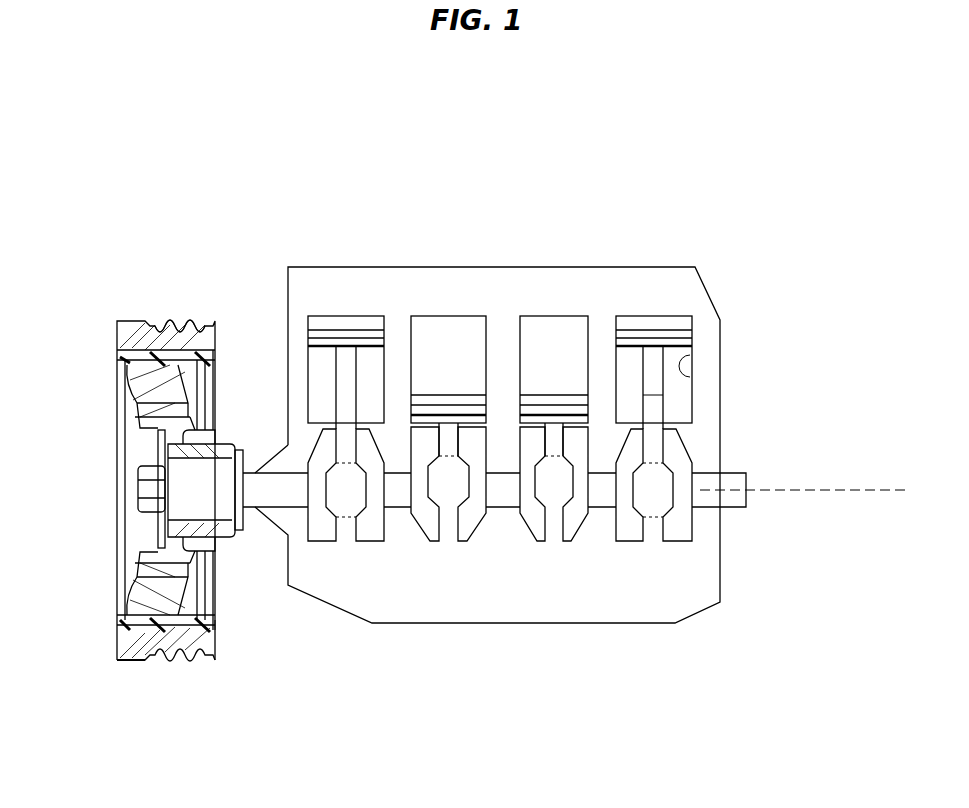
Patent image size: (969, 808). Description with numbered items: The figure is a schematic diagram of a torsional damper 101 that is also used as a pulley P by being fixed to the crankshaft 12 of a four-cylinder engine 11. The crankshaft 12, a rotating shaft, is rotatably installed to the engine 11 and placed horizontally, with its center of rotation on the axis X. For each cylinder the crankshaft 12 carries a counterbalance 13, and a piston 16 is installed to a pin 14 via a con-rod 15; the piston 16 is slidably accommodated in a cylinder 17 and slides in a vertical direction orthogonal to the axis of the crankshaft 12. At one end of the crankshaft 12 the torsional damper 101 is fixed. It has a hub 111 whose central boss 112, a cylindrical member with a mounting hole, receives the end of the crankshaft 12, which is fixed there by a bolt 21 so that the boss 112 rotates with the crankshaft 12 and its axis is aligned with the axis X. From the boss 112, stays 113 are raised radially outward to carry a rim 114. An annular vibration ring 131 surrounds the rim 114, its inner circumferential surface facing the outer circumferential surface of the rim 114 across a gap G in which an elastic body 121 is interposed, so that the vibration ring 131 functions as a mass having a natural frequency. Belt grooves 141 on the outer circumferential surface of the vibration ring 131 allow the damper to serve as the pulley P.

The torsional damper 101 is at (475, 439).
The engine 11 is at (624, 267).
The crankshaft 12 is at (746, 507).
The counterbalance 13 is at (630, 541).
The pin 14 is at (680, 478).
The con-rod 15 is at (665, 400).
The piston 16 is at (632, 316).
The cylinder 17 is at (690, 382).
The bolt 21 is at (146, 490).
The hub 111 is at (127, 380).
The boss 112 is at (222, 442).
The stays 113 is at (128, 598).
The rim 114 is at (118, 618).
The elastic body 121 is at (117, 632).
The vibration ring 131 is at (121, 662).
The belt grooves 141 is at (176, 320).
The pulley P is at (158, 464).
The gap G is at (216, 628).
The axis X is at (884, 490).